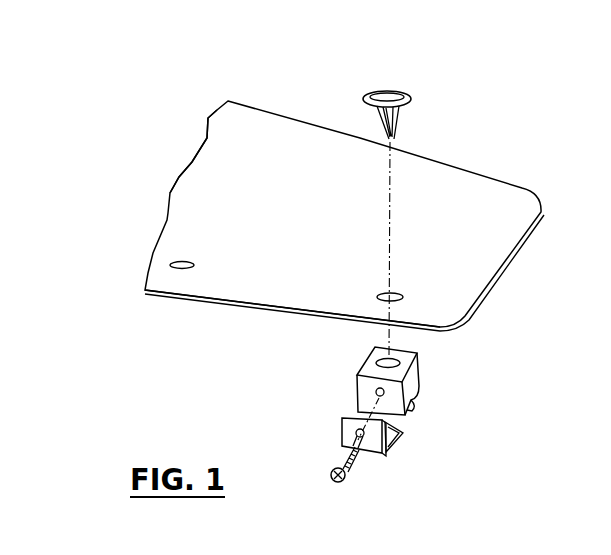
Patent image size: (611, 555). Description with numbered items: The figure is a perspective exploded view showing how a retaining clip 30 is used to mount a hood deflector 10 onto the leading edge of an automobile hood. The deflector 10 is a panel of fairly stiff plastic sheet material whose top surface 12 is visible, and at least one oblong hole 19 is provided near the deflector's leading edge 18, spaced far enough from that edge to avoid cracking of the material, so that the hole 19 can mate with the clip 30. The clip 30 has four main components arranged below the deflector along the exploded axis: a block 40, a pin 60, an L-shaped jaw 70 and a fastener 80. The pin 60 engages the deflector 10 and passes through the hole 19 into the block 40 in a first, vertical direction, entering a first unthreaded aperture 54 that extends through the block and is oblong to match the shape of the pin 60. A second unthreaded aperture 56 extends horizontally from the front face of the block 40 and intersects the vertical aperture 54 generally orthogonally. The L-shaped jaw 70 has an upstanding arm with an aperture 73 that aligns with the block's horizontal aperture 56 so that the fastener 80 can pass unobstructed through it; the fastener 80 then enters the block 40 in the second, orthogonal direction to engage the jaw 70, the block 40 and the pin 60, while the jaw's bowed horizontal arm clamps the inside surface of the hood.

The hood deflector 10 is at (522, 187).
The top surface 12 is at (195, 175).
The leading edge 18 is at (237, 308).
The hole 19 is at (195, 263).
The retaining clip 30 is at (303, 417).
The block 40 is at (395, 378).
The first unthreaded aperture 54 is at (377, 362).
The second unthreaded aperture 56 is at (376, 392).
The pin 60 is at (420, 90).
The L-shaped jaw 70 is at (404, 461).
The aperture 73 is at (363, 442).
The fastener 80 is at (327, 474).